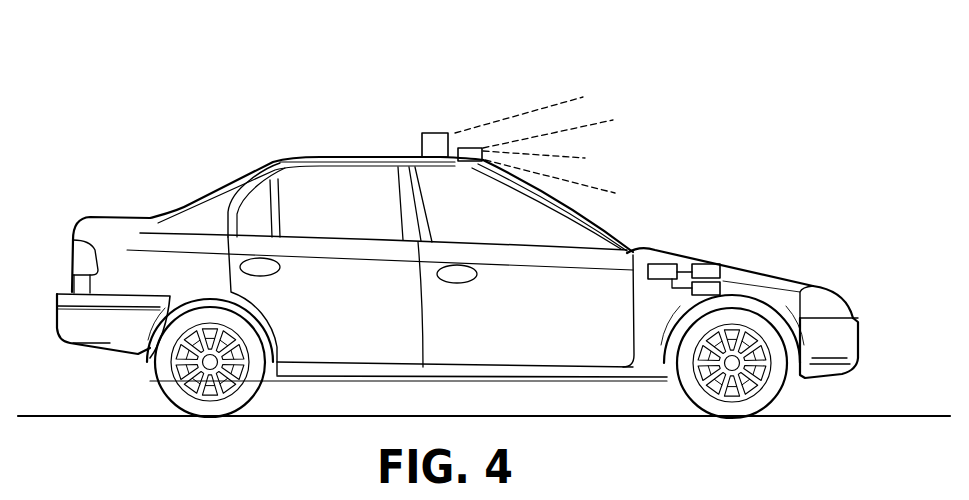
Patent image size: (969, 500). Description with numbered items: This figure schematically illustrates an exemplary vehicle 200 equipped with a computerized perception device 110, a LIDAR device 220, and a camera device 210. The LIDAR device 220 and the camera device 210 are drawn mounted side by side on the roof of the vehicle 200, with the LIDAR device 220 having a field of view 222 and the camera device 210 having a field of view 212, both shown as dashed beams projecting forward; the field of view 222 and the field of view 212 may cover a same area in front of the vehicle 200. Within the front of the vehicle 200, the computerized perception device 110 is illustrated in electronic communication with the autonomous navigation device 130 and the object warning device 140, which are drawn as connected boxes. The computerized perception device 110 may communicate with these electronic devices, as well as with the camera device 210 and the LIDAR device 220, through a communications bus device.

The vehicle 200 is at (221, 144).
The LIDAR device 220 is at (435, 133).
The camera device 210 is at (468, 148).
The field of view 222 is at (558, 105).
The field of view 212 is at (583, 183).
The computerized perception device 110 is at (665, 264).
The autonomous navigation device 130 is at (707, 264).
The object warning device 140 is at (721, 281).